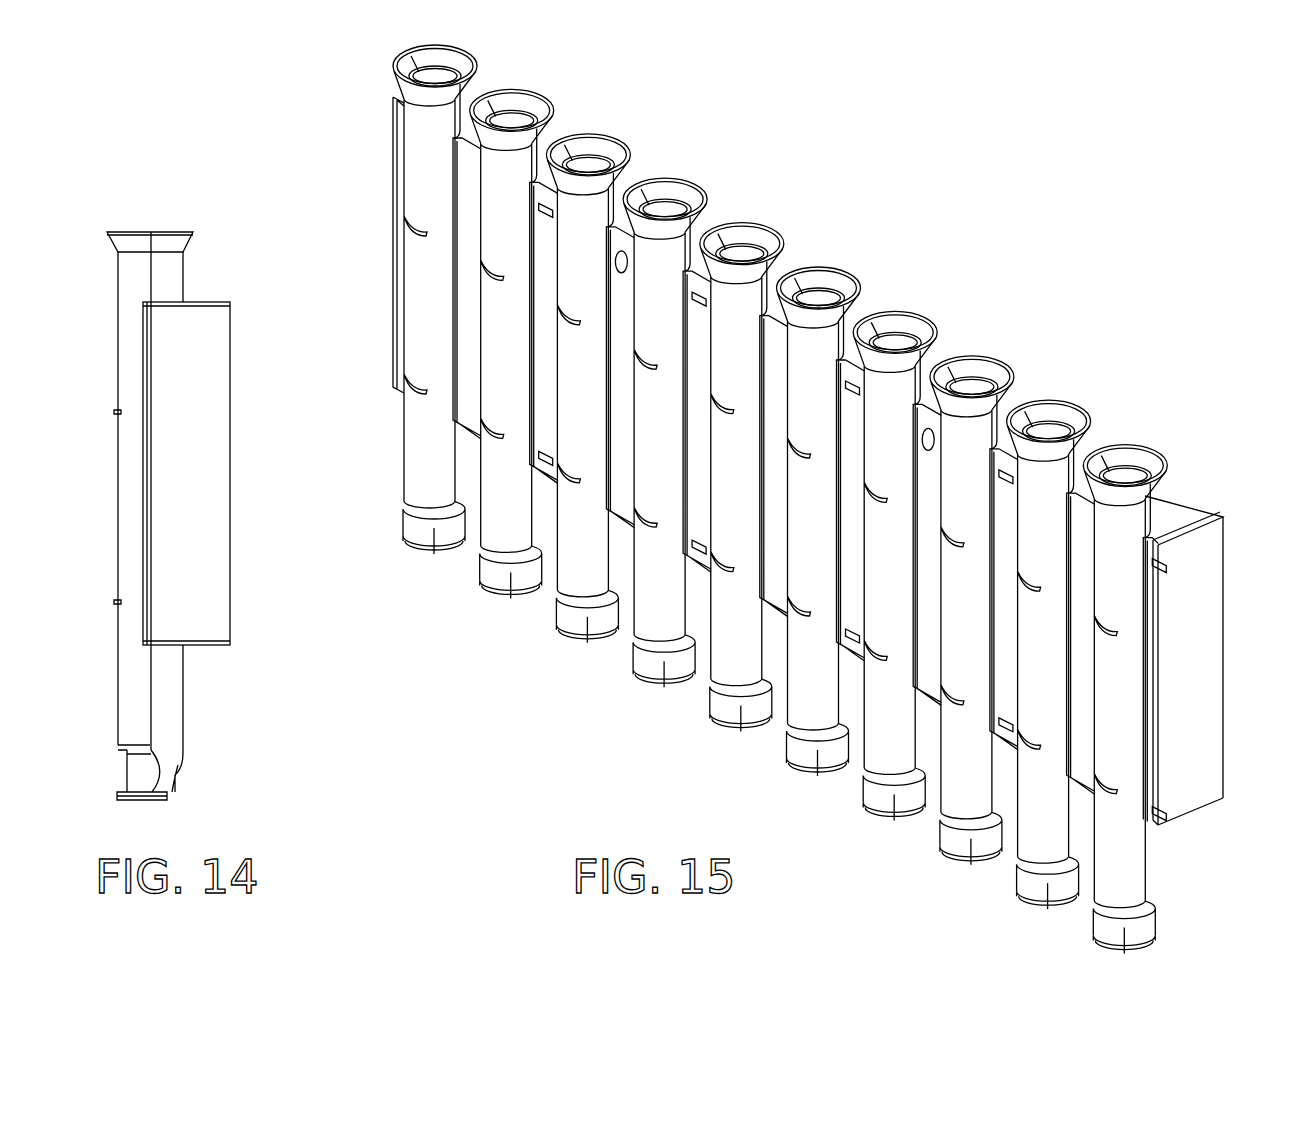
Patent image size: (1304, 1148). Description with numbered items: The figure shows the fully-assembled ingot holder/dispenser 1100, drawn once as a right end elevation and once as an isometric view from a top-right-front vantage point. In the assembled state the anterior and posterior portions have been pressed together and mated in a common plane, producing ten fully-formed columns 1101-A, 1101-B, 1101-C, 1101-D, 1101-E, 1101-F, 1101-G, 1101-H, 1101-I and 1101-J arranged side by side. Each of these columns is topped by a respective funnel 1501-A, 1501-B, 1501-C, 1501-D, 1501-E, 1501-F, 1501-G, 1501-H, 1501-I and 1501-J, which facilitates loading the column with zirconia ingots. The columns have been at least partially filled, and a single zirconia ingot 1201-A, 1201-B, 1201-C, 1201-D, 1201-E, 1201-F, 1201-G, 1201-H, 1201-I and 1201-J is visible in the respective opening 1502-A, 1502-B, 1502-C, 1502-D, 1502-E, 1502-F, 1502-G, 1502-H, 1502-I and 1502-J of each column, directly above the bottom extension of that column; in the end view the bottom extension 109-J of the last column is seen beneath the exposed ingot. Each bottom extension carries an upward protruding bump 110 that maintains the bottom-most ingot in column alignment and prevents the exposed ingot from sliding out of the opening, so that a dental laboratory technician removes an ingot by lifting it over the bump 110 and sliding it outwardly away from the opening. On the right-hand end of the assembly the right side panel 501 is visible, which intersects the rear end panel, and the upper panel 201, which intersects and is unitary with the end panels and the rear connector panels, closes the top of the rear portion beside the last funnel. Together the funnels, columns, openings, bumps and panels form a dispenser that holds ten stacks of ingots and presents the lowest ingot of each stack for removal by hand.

In FIG. 15, the fully-assembled ingot holder/dispenser 1100 is at (359, 80).
In FIG. 15, the funnel 1501-A is at (486, 273).
In FIG. 15, the funnel 1501-B is at (563, 317).
In FIG. 15, the funnel 1501-C is at (640, 362).
In FIG. 15, the funnel 1501-D is at (717, 406).
In FIG. 15, the funnel 1501-E is at (793, 451).
In FIG. 15, the funnel 1501-F is at (870, 495).
In FIG. 15, the funnel 1501-G is at (947, 539).
In FIG. 15, the funnel 1501-H is at (1024, 584).
In FIG. 15, the funnel 1501-I is at (1097, 628).
In FIG. 15, the funnel 1501-J is at (1174, 673).
In FIG. 15, the fully-formed column 1101-A is at (489, 253).
In FIG. 15, the fully-formed column 1101-B is at (596, 297).
In FIG. 15, the fully-formed column 1101-C is at (672, 342).
In FIG. 15, the fully-formed column 1101-D is at (750, 386).
In FIG. 15, the fully-formed column 1101-E is at (826, 431).
In FIG. 15, the fully-formed column 1101-F is at (902, 475).
In FIG. 15, the fully-formed column 1101-G is at (980, 519).
In FIG. 15, the fully-formed column 1101-H is at (1057, 564).
In FIG. 15, the fully-formed column 1101-I is at (1130, 608).
In FIG. 14, the fully-formed column 1101-J is at (132, 347).
In FIG. 15, the fully-formed column 1101-J is at (1206, 644).
In FIG. 15, the opening 1502-A is at (385, 519).
In FIG. 15, the opening 1502-B is at (437, 576).
In FIG. 15, the opening 1502-C is at (513, 620).
In FIG. 15, the opening 1502-D is at (590, 665).
In FIG. 15, the opening 1502-E is at (667, 709).
In FIG. 15, the opening 1502-F is at (744, 754).
In FIG. 15, the opening 1502-G is at (820, 798).
In FIG. 15, the opening 1502-H is at (897, 842).
In FIG. 15, the opening 1502-I is at (974, 887).
In FIG. 15, the opening 1502-J is at (1050, 931).
In FIG. 15, the zirconia ingot 1201-A is at (383, 557).
In FIG. 15, the zirconia ingot 1201-B is at (460, 601).
In FIG. 15, the zirconia ingot 1201-C is at (536, 646).
In FIG. 15, the zirconia ingot 1201-D is at (613, 690).
In FIG. 15, the zirconia ingot 1201-E is at (690, 735).
In FIG. 15, the zirconia ingot 1201-F is at (767, 779).
In FIG. 15, the zirconia ingot 1201-G is at (843, 823).
In FIG. 15, the zirconia ingot 1201-H is at (920, 868).
In FIG. 15, the zirconia ingot 1201-I is at (997, 912).
In FIG. 14, the zirconia ingot 1201-J is at (172, 245).
In FIG. 15, the zirconia ingot 1201-J is at (1168, 945).
In FIG. 15, the upward protruding bump 110 is at (757, 749).
In FIG. 14, the right side panel 501 is at (203, 465).
In FIG. 15, the right side panel 501 is at (1200, 657).
In FIG. 15, the upper panel 201 is at (1187, 513).
In FIG. 14, the bottom extension 109-J is at (158, 802).